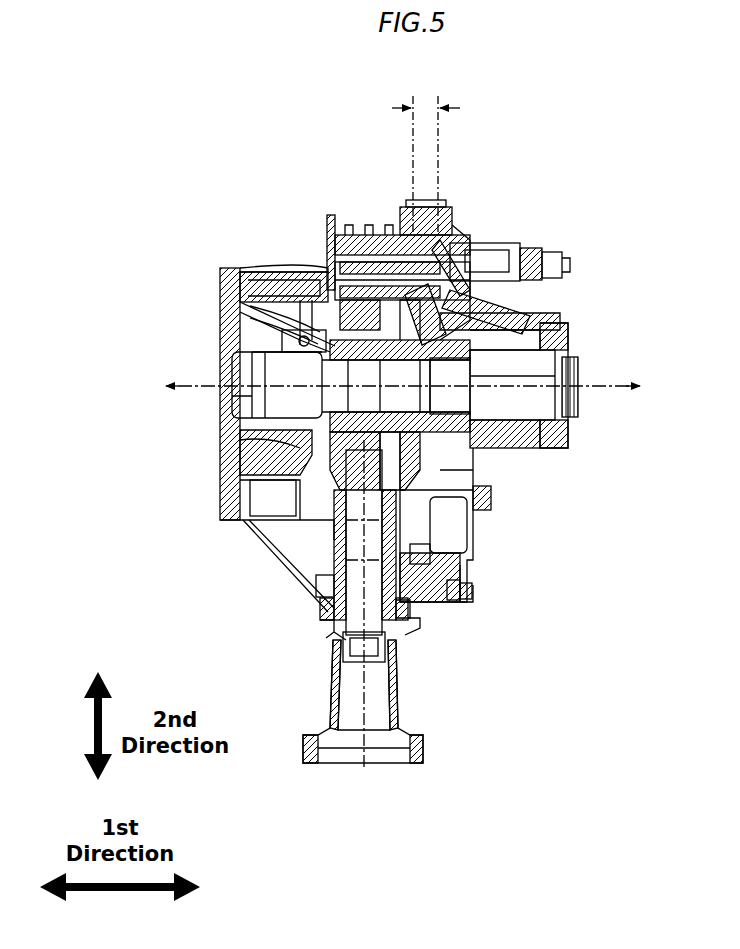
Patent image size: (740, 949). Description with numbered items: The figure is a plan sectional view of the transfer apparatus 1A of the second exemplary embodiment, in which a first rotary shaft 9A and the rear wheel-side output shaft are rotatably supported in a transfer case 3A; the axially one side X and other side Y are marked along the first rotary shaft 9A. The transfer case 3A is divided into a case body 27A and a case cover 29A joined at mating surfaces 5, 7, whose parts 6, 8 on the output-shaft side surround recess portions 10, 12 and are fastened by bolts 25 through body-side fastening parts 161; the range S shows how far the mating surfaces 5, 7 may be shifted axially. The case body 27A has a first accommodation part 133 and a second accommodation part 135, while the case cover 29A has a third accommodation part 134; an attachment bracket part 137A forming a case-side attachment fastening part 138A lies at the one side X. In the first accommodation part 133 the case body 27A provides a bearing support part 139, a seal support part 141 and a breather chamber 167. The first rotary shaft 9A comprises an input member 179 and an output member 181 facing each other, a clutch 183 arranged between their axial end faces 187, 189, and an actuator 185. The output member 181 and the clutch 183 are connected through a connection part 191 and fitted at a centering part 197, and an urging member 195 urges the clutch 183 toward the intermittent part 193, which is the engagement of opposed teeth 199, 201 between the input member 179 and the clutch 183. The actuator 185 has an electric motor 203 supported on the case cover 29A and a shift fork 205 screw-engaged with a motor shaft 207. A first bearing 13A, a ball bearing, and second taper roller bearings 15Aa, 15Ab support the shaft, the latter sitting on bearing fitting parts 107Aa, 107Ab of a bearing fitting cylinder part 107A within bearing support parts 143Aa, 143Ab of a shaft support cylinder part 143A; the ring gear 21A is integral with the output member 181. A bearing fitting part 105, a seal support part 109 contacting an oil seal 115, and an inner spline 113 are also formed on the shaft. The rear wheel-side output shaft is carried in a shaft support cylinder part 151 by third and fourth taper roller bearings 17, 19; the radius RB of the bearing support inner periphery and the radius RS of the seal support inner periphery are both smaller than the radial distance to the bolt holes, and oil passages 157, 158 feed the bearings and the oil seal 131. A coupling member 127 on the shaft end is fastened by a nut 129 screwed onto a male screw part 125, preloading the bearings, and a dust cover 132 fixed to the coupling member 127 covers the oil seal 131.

The transfer apparatus 1A is at (362, 128).
The transfer case 3A is at (360, 228).
The mating surface 5 is at (448, 224).
The part of mating surface 6 is at (445, 570).
The mating surface 7 is at (426, 205).
The part of mating surface 8 is at (462, 602).
The first rotary shaft 9A is at (372, 258).
The recess portion 10 is at (460, 520).
The recess portion 12 is at (468, 530).
The first bearing 13A is at (246, 292).
The second taper roller bearing 15Aa is at (572, 330).
The second taper roller bearing 15Ab is at (578, 352).
The third taper roller bearing 17 is at (300, 568).
The fourth taper roller bearing 19 is at (328, 606).
The ring gear 21A is at (472, 252).
The bolts 25 is at (474, 591).
The case body 27A is at (312, 270).
The case cover 29A is at (504, 238).
The bearing fitting part 105 is at (277, 385).
The bearing fitting cylinder part 107A is at (512, 385).
The bearing fitting part 107Aa is at (450, 386).
The bearing fitting part 107Ab is at (512, 376).
The seal support part 109 is at (282, 358).
The inner spline 113 is at (232, 402).
The oil seal 115 is at (278, 345).
The male screw part 125 is at (398, 662).
The coupling member 127 is at (406, 706).
The nut 129 is at (386, 650).
The oil seal 131 is at (336, 636).
The dust cover 132 is at (330, 620).
The first accommodation part 133 is at (292, 284).
The third accommodation part 134 is at (492, 506).
The second accommodation part 135 is at (296, 518).
The attachment bracket part 137A is at (232, 328).
The case-side attachment fastening part 138A is at (220, 497).
The bearing support part 139 is at (266, 276).
The seal support part 141 is at (248, 276).
The shaft support cylinder part 143A is at (560, 326).
The bearing support part 143Aa is at (556, 302).
The bearing support part 143Ab is at (580, 340).
The shaft support cylinder part 151 is at (318, 590).
The oil passage 157 is at (440, 546).
The oil passage 158 is at (424, 622).
The body-side fastening part 161 is at (398, 258).
The breather chamber 167 is at (442, 238).
The input member 179 is at (236, 440).
The output member 181 is at (556, 440).
The clutch 183 is at (338, 265).
The actuator 185 is at (520, 262).
The axial end face 187 is at (396, 386).
The axial end face 189 is at (404, 386).
The connection part 191 is at (388, 455).
The intermittent part 193 is at (330, 288).
The urging member 195 is at (416, 412).
The centering part 197 is at (490, 496).
The tooth 199 is at (366, 444).
The tooth 201 is at (356, 452).
The electric motor 203 is at (542, 262).
The shift fork 205 is at (386, 258).
The motor shaft 207 is at (352, 258).
The range S is at (426, 163).
The radius of bearing support part inner periphery RB is at (322, 575).
The radius of seal support part inner periphery RS is at (324, 602).